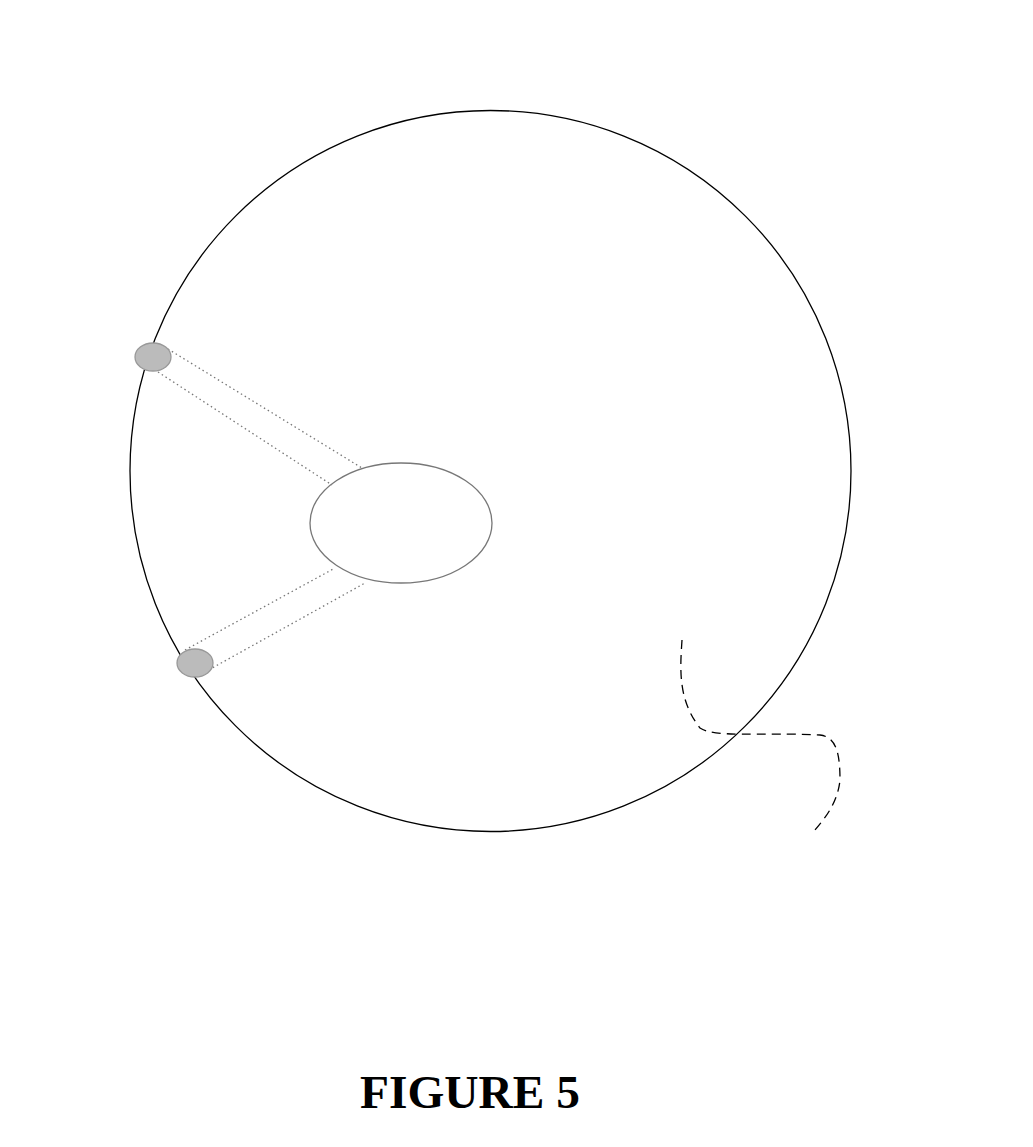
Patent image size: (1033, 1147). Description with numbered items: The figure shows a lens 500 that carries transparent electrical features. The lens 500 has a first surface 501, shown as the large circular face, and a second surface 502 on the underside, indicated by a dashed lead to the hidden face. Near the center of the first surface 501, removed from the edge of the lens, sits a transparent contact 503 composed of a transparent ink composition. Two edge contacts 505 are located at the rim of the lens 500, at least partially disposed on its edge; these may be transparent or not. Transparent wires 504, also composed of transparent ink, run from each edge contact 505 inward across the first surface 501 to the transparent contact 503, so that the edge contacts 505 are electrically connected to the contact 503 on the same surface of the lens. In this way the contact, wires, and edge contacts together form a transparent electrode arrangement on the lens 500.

The lens 500 is at (80, 11).
The first surface 501 is at (645, 220).
The second surface 502 is at (793, 764).
The transparent contact 503 is at (433, 505).
The transparent wires 504 is at (270, 417).
The edge contacts 505 is at (150, 357).